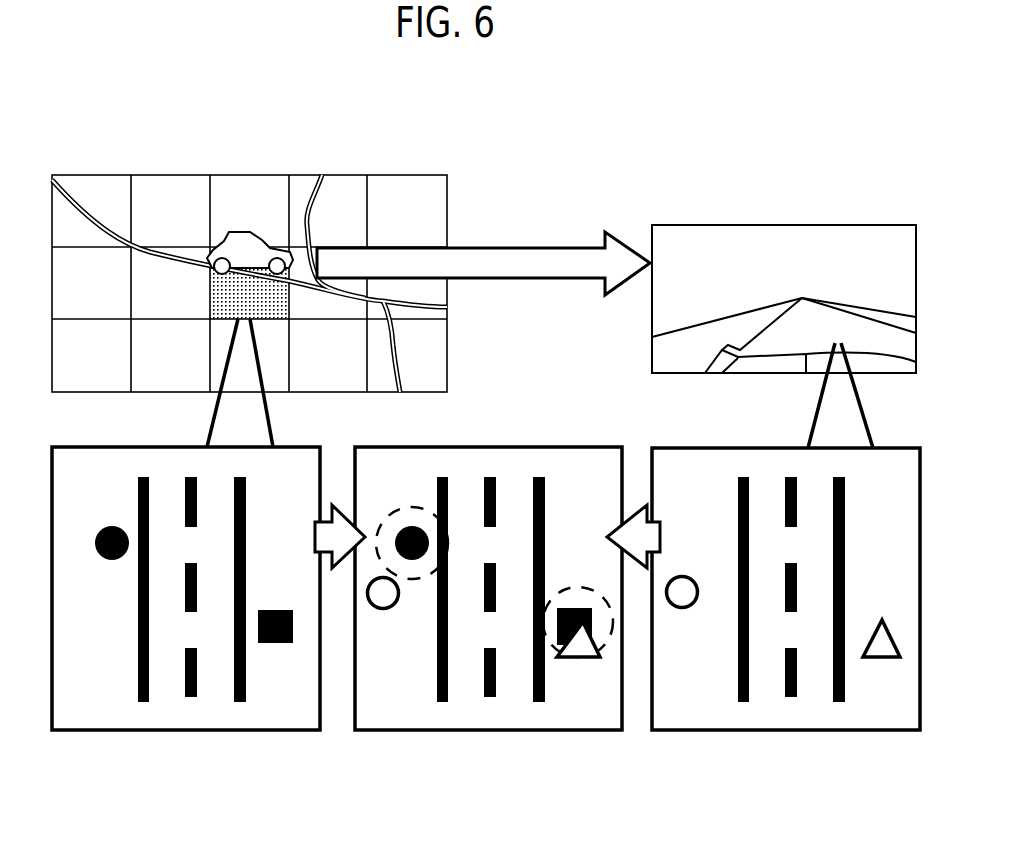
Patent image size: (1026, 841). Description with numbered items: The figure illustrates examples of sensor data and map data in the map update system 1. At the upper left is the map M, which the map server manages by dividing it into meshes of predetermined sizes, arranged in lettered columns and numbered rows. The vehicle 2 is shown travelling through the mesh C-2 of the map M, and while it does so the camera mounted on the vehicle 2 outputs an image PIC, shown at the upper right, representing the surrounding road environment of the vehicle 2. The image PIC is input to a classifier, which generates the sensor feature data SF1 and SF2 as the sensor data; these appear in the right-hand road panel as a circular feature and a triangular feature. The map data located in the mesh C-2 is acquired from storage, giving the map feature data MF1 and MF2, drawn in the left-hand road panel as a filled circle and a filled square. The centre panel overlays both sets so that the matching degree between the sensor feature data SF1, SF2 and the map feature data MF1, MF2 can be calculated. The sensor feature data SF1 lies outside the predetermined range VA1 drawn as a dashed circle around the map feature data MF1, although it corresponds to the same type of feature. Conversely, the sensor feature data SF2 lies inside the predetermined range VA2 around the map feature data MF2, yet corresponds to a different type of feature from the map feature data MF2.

The map update system 1 is at (65, 123).
The vehicle 2 is at (246, 232).
The map M is at (443, 173).
The image PIC is at (864, 229).
The map feature data MF1 is at (112, 526).
The map feature data MF2 is at (266, 645).
The sensor feature data SF1 is at (383, 610).
The sensor feature data SF2 is at (585, 660).
The predetermined range VA1 is at (418, 508).
The predetermined range VA2 is at (578, 590).